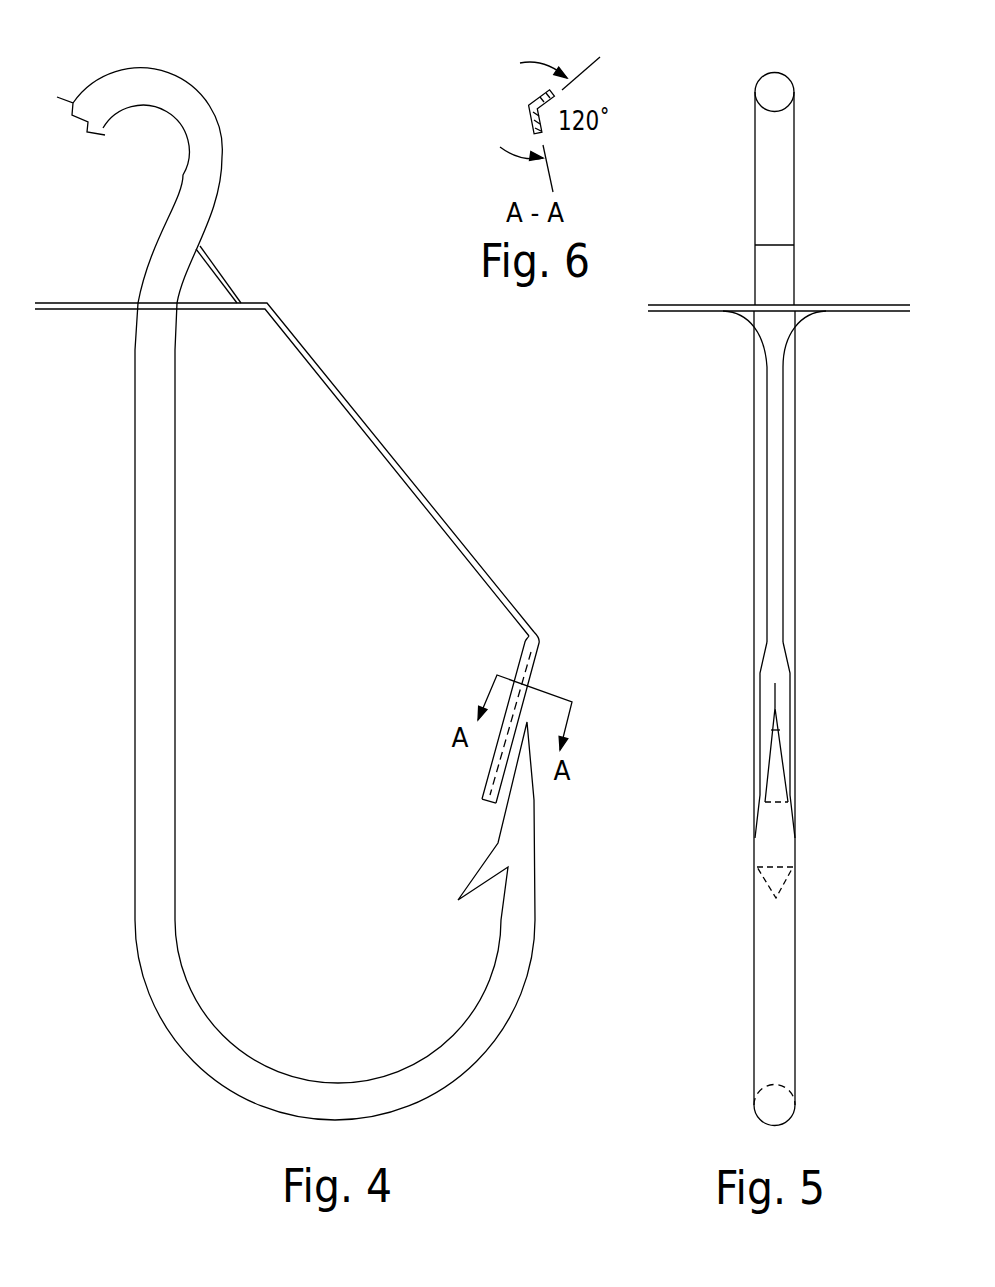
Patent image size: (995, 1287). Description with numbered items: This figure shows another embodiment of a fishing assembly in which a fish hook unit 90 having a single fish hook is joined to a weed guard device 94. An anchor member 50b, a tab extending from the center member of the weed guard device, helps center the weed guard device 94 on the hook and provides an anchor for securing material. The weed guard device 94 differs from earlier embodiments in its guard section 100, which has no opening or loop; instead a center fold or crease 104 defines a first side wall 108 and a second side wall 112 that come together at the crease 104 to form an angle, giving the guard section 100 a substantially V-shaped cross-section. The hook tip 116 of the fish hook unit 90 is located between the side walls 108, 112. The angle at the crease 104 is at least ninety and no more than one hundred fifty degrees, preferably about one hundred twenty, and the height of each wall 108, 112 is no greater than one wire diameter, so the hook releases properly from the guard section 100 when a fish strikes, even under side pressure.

In FIG. 4, the fish hook unit 90 is at (227, 182).
In FIG. 5, the fish hook unit 90 is at (796, 200).
In FIG. 4, the anchor member 50b is at (217, 268).
In FIG. 4, the weed guard device 94 is at (278, 302).
In FIG. 5, the weed guard device 94 is at (785, 490).
In FIG. 4, the hook tip 116 is at (165, 665).
In FIG. 5, the hook tip 116 is at (794, 592).
In FIG. 4, the guard section 100 is at (546, 668).
In FIG. 5, the guard section 100 is at (783, 703).
In FIG. 6, the center fold or crease 104 is at (530, 106).
In FIG. 5, the center fold or crease 104 is at (775, 684).
In FIG. 4, the first side wall 108 is at (480, 805).
In FIG. 6, the first side wall 108 is at (533, 100).
In FIG. 5, the first side wall 108 is at (765, 730).
In FIG. 6, the second side wall 112 is at (530, 132).
In FIG. 5, the second side wall 112 is at (793, 743).